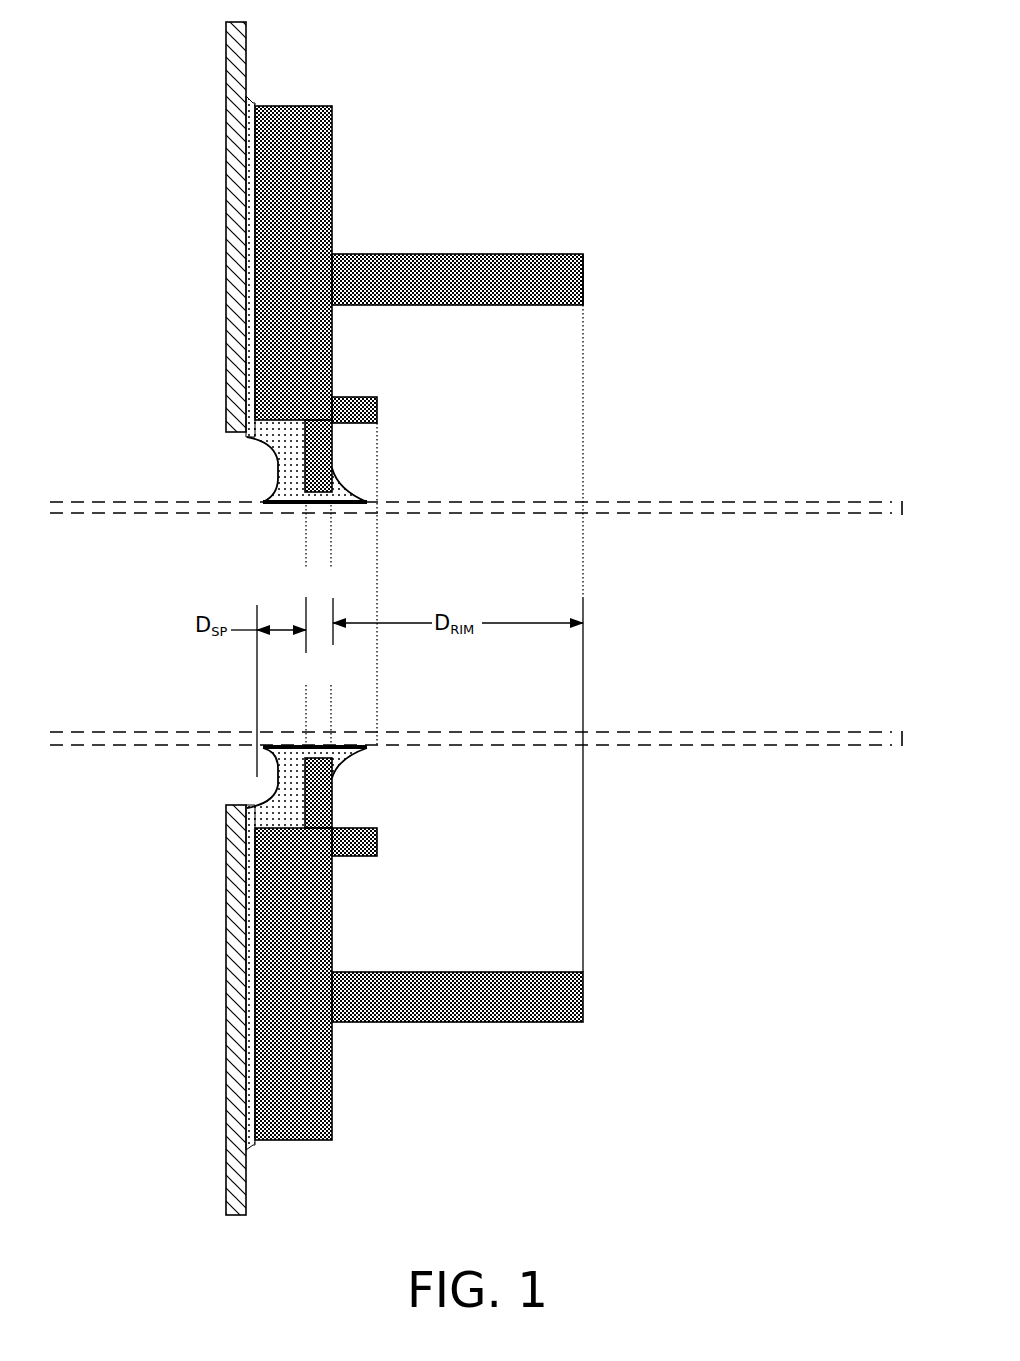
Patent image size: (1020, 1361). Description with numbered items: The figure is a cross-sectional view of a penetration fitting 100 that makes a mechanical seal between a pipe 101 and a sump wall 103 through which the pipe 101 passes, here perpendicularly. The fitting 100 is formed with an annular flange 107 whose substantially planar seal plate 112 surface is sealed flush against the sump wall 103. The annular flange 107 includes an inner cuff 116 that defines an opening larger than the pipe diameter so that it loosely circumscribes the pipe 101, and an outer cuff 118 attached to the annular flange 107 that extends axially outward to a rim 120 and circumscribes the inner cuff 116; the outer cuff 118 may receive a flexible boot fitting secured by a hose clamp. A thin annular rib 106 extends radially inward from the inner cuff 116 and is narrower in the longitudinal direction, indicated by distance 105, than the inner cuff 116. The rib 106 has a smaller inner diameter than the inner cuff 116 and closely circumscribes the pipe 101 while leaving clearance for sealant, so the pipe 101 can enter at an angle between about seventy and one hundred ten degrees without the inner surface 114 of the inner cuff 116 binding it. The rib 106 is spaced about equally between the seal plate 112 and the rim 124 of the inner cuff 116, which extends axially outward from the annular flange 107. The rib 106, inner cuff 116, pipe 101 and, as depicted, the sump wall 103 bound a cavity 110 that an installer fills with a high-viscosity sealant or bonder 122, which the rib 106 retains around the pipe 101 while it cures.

The penetration fitting 100 is at (703, 147).
The pipe 101 is at (760, 502).
The sump wall 103 is at (225, 47).
The distance 105 is at (282, 543).
The thin annular rib 106 is at (320, 445).
The annular flange 107 is at (300, 150).
The cavity 110 is at (262, 465).
The seal plate 112 is at (255, 212).
The inner surface 114 is at (280, 418).
The inner cuff 116 is at (272, 412).
The outer cuff 118 is at (473, 268).
The rim 120 is at (583, 285).
The sealant/bonder 122 is at (272, 457).
The rim 124 is at (378, 420).